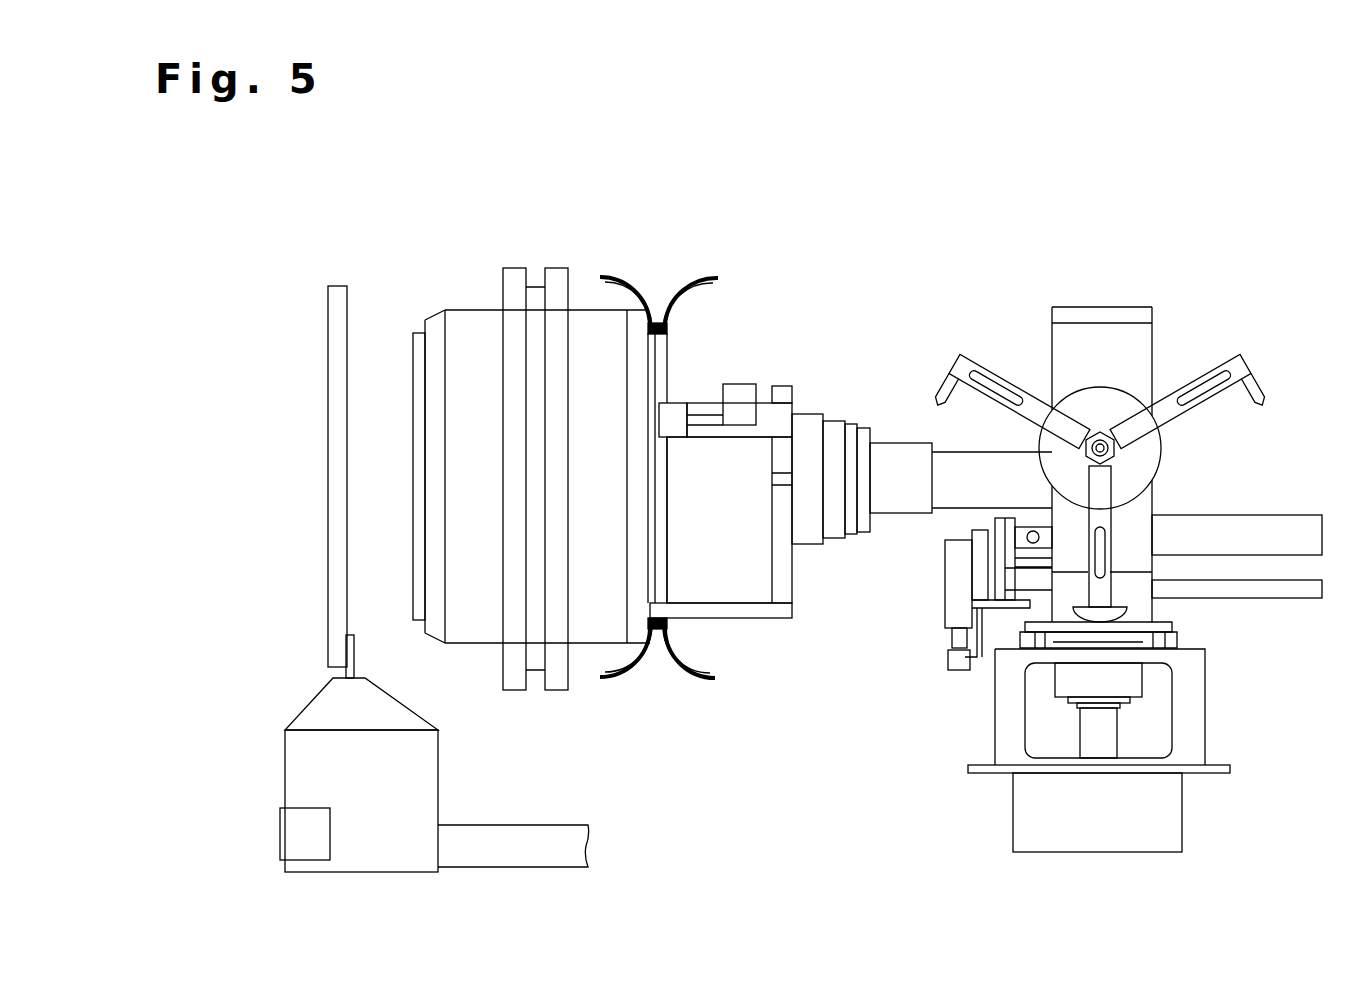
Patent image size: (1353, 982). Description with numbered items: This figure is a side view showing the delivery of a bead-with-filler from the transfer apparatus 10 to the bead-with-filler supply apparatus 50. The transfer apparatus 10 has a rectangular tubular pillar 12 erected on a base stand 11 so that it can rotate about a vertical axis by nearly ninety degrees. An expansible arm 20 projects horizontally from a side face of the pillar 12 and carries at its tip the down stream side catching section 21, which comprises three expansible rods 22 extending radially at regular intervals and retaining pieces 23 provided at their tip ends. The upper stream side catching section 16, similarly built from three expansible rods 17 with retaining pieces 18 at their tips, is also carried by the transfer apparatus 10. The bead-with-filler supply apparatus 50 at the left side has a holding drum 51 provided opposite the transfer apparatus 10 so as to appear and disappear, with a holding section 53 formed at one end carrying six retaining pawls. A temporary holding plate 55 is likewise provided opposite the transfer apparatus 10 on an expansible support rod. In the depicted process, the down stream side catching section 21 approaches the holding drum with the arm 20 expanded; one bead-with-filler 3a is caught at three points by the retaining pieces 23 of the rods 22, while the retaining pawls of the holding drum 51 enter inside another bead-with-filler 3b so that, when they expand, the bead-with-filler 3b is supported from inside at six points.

The transfer apparatus 10 is at (1099, 165).
The base stand 11 is at (1205, 707).
The pillar 12 is at (1105, 307).
The upper stream side catching section 16 is at (1095, 428).
The expansible rods 17 is at (1002, 377).
The retaining pieces 18 is at (940, 393).
The arm 20 is at (958, 505).
The down stream side catching section 21 is at (755, 566).
The expansible rods 22 is at (793, 567).
The retaining pieces 23 is at (721, 655).
The bead-with-filler 3a is at (668, 356).
The bead-with-filler 3b is at (652, 352).
The bead-with-filler supply apparatus 50 is at (510, 380).
The holding drum 51 is at (488, 305).
The holding section 53 is at (410, 355).
The temporary holding plate 55 is at (335, 283).